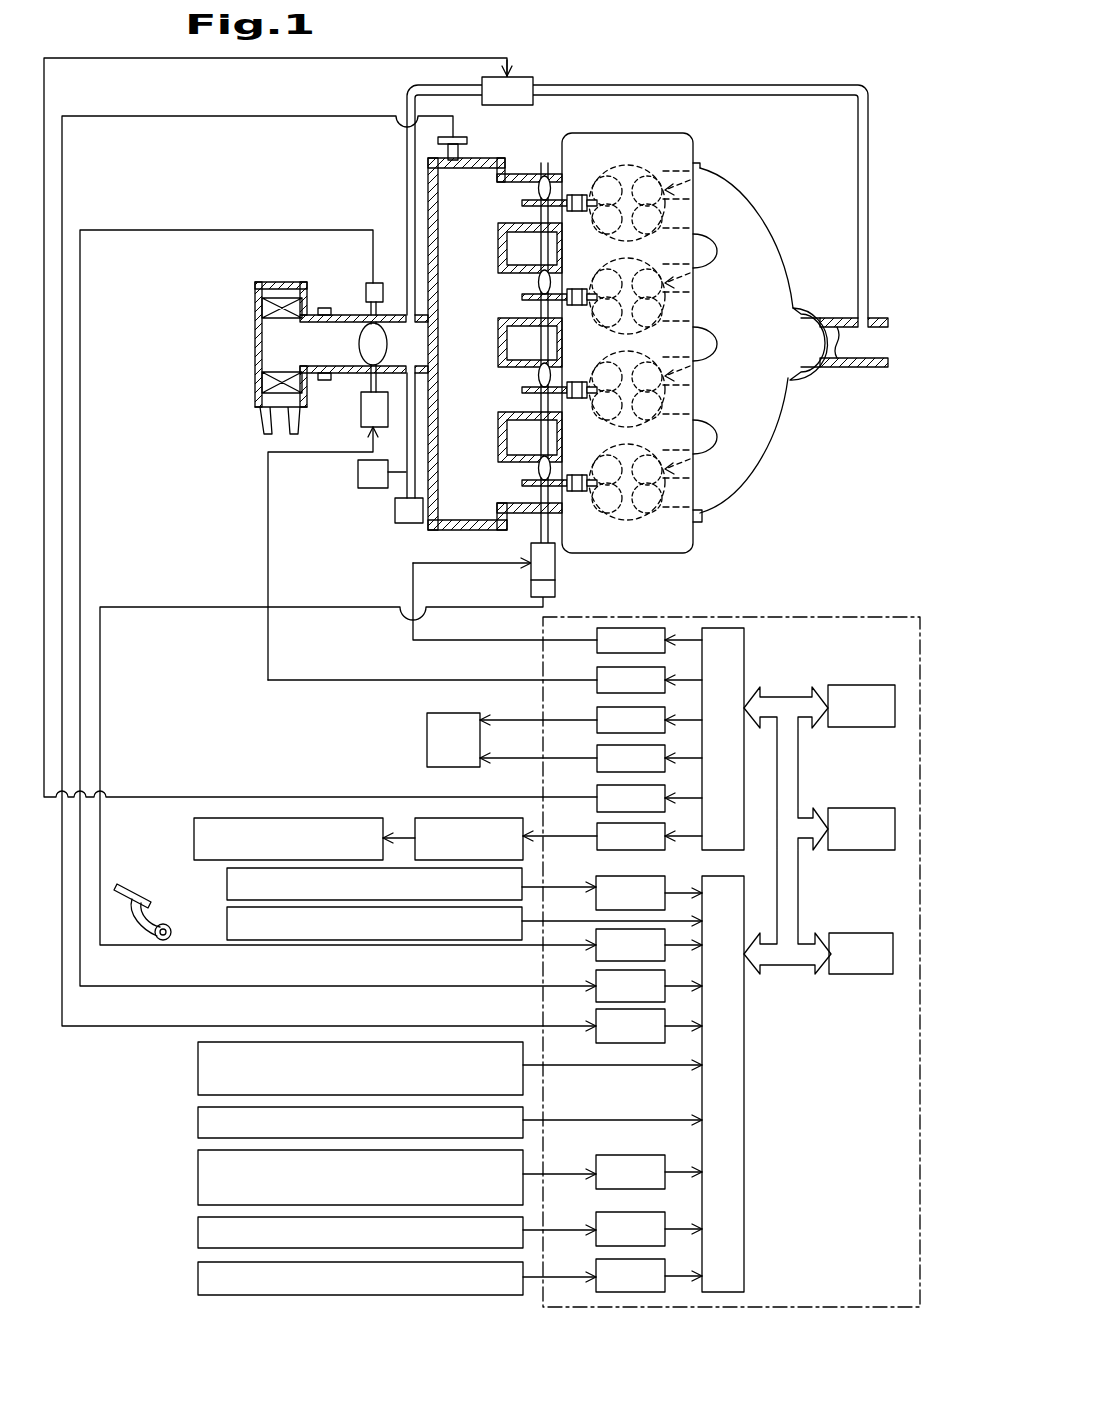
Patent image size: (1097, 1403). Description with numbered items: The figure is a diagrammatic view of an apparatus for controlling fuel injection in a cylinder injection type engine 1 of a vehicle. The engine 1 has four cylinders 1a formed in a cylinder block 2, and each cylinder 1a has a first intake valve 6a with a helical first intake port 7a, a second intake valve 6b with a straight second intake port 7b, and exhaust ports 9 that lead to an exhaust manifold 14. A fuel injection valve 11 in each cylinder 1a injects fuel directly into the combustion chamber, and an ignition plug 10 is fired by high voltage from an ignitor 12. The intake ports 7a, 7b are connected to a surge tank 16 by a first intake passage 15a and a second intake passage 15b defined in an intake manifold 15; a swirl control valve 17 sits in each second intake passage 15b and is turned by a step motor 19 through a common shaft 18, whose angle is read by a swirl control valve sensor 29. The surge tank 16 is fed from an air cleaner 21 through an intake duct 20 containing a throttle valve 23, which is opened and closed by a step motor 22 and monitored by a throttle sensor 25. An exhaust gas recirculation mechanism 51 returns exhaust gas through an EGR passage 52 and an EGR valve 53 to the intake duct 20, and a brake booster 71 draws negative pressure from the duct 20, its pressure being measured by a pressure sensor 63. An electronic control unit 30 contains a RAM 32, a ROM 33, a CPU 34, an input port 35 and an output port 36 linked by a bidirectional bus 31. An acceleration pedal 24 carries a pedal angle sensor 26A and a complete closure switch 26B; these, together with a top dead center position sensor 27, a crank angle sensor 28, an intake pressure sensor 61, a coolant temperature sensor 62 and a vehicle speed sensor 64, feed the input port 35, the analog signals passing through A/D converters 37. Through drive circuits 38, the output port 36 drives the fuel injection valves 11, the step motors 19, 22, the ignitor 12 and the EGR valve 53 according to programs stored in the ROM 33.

The engine 1 is at (696, 135).
The cylinder 1a is at (700, 524).
The cylinder block 2 is at (671, 553).
The first intake valve 6a is at (612, 512).
The second intake valve 6b is at (655, 418).
The first intake port 7a is at (600, 567).
The second intake port 7b is at (590, 410).
The exhaust port 9 is at (690, 470).
The ignition plug 10 is at (348, 817).
The fuel injection valve 11 is at (427, 735).
The ignitor 12 is at (494, 817).
The exhaust manifold 14 is at (779, 396).
The intake manifold 15 is at (523, 514).
The first intake passage 15a is at (527, 495).
The second intake passage 15b is at (530, 470).
The surge tank 16 is at (407, 190).
The swirl control valve 17 is at (526, 405).
The common shaft 18 is at (498, 345).
The step motor 19 is at (531, 574).
The intake duct 20 is at (340, 315).
The air cleaner 21 is at (255, 387).
The step motor 22 is at (361, 418).
The throttle valve 23 is at (387, 343).
The acceleration pedal 24 is at (124, 898).
The throttle sensor 25 is at (372, 283).
The pedal angle sensor 26A is at (227, 883).
The complete closure switch 26B is at (227, 930).
The top dead center position sensor 27 is at (198, 1065).
The crank angle sensor 28 is at (198, 1125).
The swirl control valve sensor 29 is at (556, 591).
The electronic control unit 30 is at (848, 611).
The bidirectional bus 31 is at (786, 697).
The random access memory 32 is at (878, 678).
The read only memory 33 is at (877, 808).
The central processing unit 34 is at (882, 933).
The input port 35 is at (744, 1094).
The output port 36 is at (744, 636).
The A/D converter 37 is at (596, 1260).
The drive circuit 38 is at (595, 846).
The exhaust gas recirculation mechanism 51 is at (636, 82).
The EGR passage 52 is at (794, 85).
The EGR valve 53 is at (533, 78).
The intake pressure sensor 61 is at (478, 140).
The coolant temperature sensor 62 is at (198, 1180).
The pressure sensor 63 is at (358, 478).
The vehicle speed sensor 64 is at (198, 1280).
The brake booster 71 is at (395, 510).